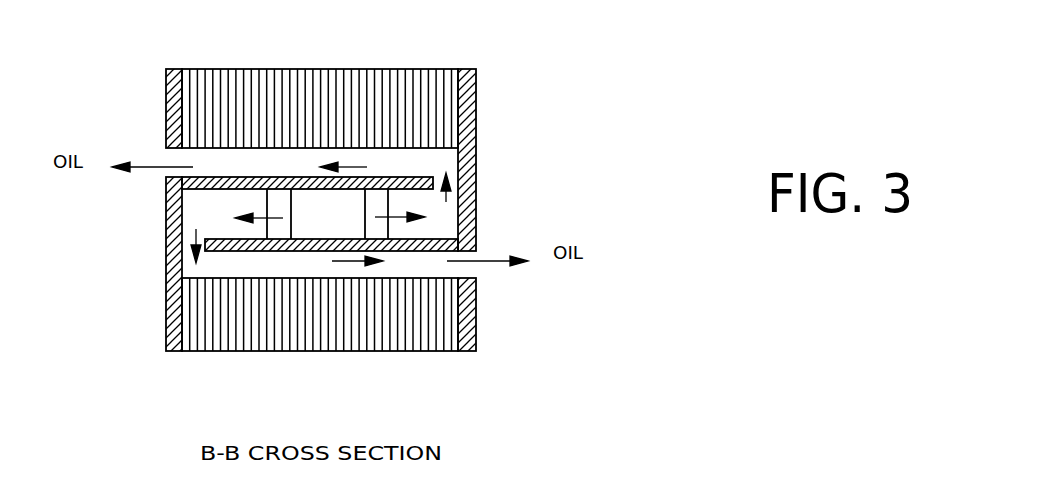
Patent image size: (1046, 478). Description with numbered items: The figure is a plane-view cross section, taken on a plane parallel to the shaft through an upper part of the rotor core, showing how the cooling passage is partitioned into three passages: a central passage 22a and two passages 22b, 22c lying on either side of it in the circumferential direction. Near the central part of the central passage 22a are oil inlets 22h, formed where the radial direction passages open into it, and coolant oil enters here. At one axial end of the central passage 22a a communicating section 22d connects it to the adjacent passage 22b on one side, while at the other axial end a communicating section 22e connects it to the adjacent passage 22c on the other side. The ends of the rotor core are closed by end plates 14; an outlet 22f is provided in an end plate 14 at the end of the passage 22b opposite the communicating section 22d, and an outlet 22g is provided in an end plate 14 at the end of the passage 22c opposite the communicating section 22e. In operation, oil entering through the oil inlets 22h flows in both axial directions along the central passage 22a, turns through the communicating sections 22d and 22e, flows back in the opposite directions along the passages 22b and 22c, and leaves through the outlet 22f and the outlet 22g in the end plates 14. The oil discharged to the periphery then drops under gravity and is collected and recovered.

The end plate 14 is at (475, 121).
The central passage 22a is at (330, 212).
The passage 22b is at (383, 158).
The passage 22c is at (460, 290).
The communicating section 22d is at (455, 195).
The communicating section 22e is at (186, 238).
The outlet 22f is at (172, 157).
The outlet 22g is at (433, 267).
The oil inlet 22h is at (380, 205).